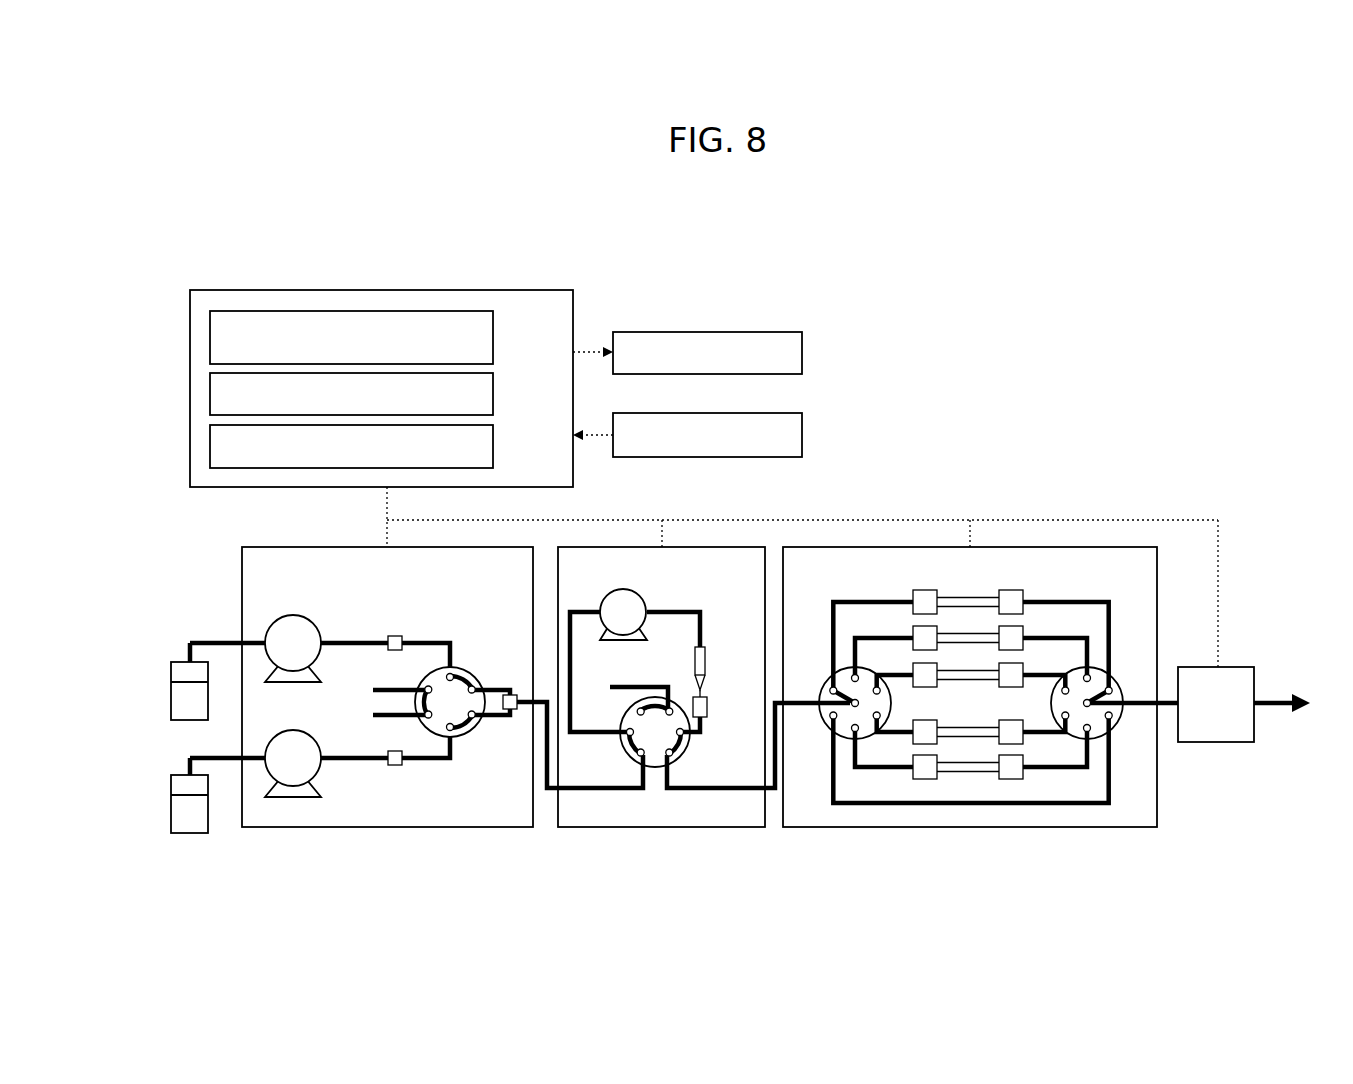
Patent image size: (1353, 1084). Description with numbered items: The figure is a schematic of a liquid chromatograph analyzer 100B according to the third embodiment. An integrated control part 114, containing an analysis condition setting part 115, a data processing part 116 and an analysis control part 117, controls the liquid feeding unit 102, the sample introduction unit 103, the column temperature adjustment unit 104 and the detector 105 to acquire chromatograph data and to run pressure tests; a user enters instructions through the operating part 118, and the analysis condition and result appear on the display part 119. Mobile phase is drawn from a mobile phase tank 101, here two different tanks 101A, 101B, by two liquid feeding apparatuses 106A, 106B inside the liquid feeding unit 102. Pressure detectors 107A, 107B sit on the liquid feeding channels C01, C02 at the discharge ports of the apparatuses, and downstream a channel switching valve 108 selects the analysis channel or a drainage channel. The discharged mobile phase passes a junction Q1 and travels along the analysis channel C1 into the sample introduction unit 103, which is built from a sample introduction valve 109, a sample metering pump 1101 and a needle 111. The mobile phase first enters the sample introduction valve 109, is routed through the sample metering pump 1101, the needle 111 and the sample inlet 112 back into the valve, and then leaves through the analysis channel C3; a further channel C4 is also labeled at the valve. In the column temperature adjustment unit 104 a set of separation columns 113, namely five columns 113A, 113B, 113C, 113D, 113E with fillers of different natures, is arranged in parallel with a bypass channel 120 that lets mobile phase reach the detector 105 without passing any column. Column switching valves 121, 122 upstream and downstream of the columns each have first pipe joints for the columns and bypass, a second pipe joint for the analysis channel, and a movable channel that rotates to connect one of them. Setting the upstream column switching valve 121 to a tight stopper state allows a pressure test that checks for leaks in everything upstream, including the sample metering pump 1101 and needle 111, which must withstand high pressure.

The liquid chromatograph analyzer 100B is at (1024, 442).
The mobile phase tank 101 is at (150, 759).
The mobile phase tank 101A is at (168, 703).
The mobile phase tank 101B is at (168, 808).
The liquid feeding unit 102 is at (361, 713).
The sample introduction unit 103 is at (661, 714).
The column temperature adjustment unit 104 is at (980, 714).
The detector 105 is at (1215, 742).
The liquid feeding apparatus 106A is at (330, 594).
The liquid feeding apparatus 106B is at (304, 734).
The pressure detector 107A is at (418, 622).
The pressure detector 107B is at (402, 768).
The channel switching valve 108 is at (510, 632).
The sample introduction valve 109 is at (621, 745).
The sample metering pump 1101 is at (639, 596).
The needle 111 is at (708, 661).
The sample inlet 112 is at (708, 704).
The separation columns 113 is at (970, 680).
The separation column 113A is at (1023, 598).
The separation column 113B is at (1023, 636).
The separation column 113C is at (1023, 671).
The separation column 113D is at (1023, 742).
The separation column 113E is at (1023, 776).
The integrated control part 114 is at (381, 364).
The analysis condition setting part 115 is at (493, 340).
The data processing part 116 is at (493, 394).
The analysis control part 117 is at (493, 446).
The operating part 118 is at (802, 435).
The display part 119 is at (802, 352).
The bypass channel 120 is at (1085, 804).
The column switching valve 121 is at (831, 728).
The column switching valve 122 is at (1111, 728).
The junction Q1 is at (513, 712).
The liquid feeding channel C01 is at (355, 642).
The liquid feeding channel C02 is at (366, 759).
The analysis channel C1 is at (583, 793).
The analysis channel C3 is at (725, 793).
The sample loop flow path C4 is at (619, 686).